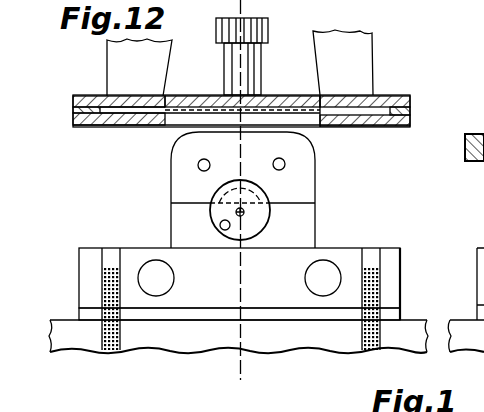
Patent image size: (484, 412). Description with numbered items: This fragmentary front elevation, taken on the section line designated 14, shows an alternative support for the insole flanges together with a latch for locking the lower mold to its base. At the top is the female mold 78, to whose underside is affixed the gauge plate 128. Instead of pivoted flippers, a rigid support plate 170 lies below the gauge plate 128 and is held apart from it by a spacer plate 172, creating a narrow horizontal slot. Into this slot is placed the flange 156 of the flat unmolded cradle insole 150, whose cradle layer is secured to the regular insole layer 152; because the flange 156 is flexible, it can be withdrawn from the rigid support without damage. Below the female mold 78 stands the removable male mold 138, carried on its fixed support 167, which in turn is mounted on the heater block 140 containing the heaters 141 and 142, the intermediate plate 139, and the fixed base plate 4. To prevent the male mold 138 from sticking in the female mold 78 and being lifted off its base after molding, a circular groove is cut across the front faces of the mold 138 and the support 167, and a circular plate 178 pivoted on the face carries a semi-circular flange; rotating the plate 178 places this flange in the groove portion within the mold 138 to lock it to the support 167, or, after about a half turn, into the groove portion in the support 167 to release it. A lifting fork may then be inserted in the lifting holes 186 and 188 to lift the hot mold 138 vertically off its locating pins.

The fixed base plate 4 is at (165, 343).
The support 14 is at (216, 5).
The female mold 78 is at (118, 66).
The gauge plate 128 is at (75, 98).
The male mold 138 is at (293, 181).
The intermediate plate 139 is at (392, 312).
The heater block 140 is at (392, 263).
The heater 141 is at (166, 272).
The heater 142 is at (307, 276).
The cradle insole 150 is at (280, 94).
The regular insole layer 152 is at (188, 103).
The flange 156 is at (121, 128).
The support 167 is at (300, 223).
The support plate 170 is at (80, 128).
The spacer plate 172 is at (75, 113).
The circular plate 178 is at (212, 216).
The lifting hole 186 is at (287, 163).
The lifting hole 188 is at (198, 168).